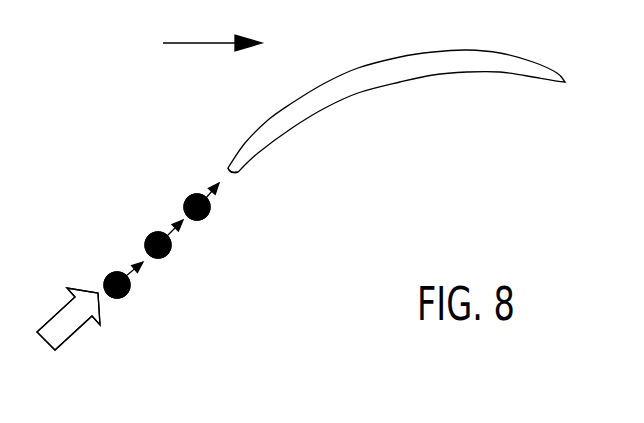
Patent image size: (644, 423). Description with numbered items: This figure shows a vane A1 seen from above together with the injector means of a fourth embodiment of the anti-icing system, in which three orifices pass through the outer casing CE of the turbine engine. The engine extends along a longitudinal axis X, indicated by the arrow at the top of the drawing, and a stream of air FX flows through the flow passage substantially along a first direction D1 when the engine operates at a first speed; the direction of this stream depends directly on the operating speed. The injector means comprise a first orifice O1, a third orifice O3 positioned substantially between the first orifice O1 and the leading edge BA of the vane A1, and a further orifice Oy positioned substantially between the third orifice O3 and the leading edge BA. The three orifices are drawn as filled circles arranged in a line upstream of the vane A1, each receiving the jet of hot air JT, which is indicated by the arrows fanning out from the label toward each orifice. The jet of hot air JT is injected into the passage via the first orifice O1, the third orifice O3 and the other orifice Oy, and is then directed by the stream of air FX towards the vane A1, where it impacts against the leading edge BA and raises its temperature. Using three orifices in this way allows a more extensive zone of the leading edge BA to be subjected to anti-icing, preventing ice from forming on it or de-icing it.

The longitudinal axis X is at (212, 32).
The vane A1 is at (393, 77).
The leading edge BA is at (236, 172).
The jet of hot air JT is at (175, 197).
The orifice Oy is at (212, 223).
The third orifice O3 is at (177, 264).
The first orifice O1 is at (126, 301).
The stream of air FX is at (59, 319).
The first direction D1 is at (68, 329).
The outer casing CE is at (551, 414).